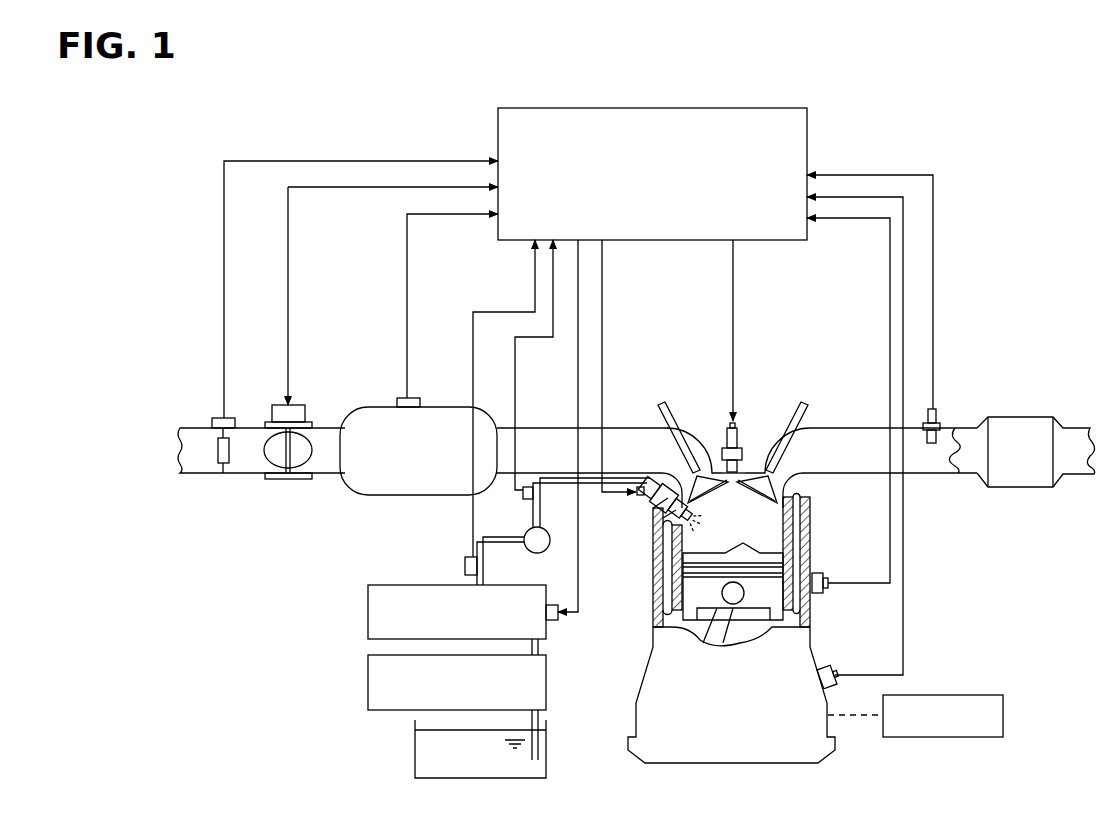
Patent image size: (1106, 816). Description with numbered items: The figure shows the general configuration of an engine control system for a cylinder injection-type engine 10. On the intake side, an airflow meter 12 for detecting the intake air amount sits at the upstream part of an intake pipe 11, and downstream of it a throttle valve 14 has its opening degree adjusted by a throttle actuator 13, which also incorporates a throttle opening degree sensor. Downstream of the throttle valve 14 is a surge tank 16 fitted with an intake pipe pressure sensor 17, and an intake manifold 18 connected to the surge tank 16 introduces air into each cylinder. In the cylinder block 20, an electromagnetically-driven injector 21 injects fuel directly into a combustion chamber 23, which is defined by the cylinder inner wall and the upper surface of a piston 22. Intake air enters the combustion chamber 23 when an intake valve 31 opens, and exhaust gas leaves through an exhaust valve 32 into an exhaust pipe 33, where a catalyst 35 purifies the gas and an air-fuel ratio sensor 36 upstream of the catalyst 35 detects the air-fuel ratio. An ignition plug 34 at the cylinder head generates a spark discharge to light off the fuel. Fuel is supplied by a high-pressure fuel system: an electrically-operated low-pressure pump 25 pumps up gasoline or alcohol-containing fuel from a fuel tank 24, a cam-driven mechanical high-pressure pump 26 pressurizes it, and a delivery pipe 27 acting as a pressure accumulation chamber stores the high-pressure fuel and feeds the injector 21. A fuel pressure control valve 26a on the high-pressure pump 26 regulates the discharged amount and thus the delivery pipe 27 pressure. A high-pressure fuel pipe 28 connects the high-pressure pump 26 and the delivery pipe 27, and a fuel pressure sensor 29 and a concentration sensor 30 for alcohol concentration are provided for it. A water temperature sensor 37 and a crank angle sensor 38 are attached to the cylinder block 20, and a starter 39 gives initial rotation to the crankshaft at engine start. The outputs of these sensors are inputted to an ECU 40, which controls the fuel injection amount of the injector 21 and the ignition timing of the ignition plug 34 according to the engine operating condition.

The engine 10 is at (852, 344).
The intake pipe 11 is at (235, 474).
The airflow meter 12 is at (236, 418).
The throttle actuator 13 is at (298, 405).
The throttle valve 14 is at (312, 460).
The surge tank 16 is at (406, 495).
The intake pipe pressure sensor 17 is at (410, 398).
The intake manifold 18 is at (540, 428).
The cylinder block 20 is at (810, 553).
The injector 21 is at (660, 500).
The piston 22 is at (672, 612).
The combustion chamber 23 is at (786, 523).
The fuel tank 24 is at (414, 750).
The low-pressure pump 25 is at (368, 680).
The high-pressure pump 26 is at (368, 610).
The fuel pressure control valve 26a is at (556, 622).
The delivery pipe 27 is at (545, 553).
The high-pressure fuel pipe 28 is at (506, 544).
The fuel pressure sensor 29 is at (464, 566).
The concentration sensor 30 is at (524, 499).
The intake valve 31 is at (708, 440).
The exhaust valve 32 is at (810, 485).
The exhaust pipe 33 is at (930, 475).
The ignition plug 34 is at (742, 436).
The catalyst 35 is at (1005, 417).
The air-fuel ratio sensor 36 is at (938, 412).
The water temperature sensor 37 is at (822, 593).
The crank angle sensor 38 is at (821, 666).
The starter 39 is at (1004, 715).
The ECU 40 is at (806, 97).